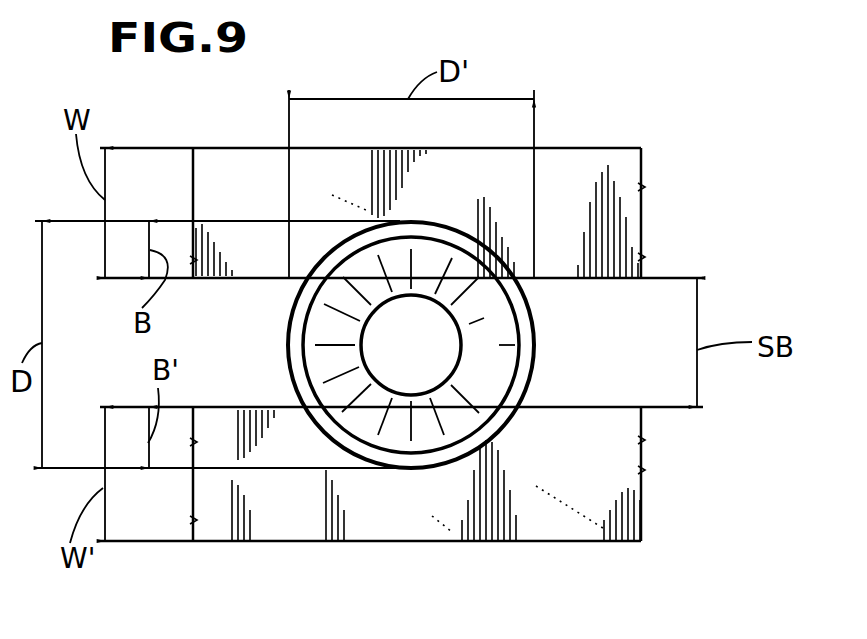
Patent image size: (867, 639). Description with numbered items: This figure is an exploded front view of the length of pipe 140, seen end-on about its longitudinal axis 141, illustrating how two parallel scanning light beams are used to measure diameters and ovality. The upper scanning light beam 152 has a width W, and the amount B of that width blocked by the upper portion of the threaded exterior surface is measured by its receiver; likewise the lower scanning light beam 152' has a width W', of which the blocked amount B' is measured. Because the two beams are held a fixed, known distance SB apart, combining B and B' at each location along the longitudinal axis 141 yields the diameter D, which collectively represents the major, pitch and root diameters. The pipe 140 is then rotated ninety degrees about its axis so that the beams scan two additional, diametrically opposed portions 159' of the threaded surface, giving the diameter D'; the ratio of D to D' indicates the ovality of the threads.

The scanning light beam 152 is at (400, 182).
The scanning light beam 152' is at (400, 509).
The length of pipe 140 is at (530, 363).
The additional portions of threaded exterior surface 159' is at (429, 345).
The longitudinal axis 141 is at (411, 345).